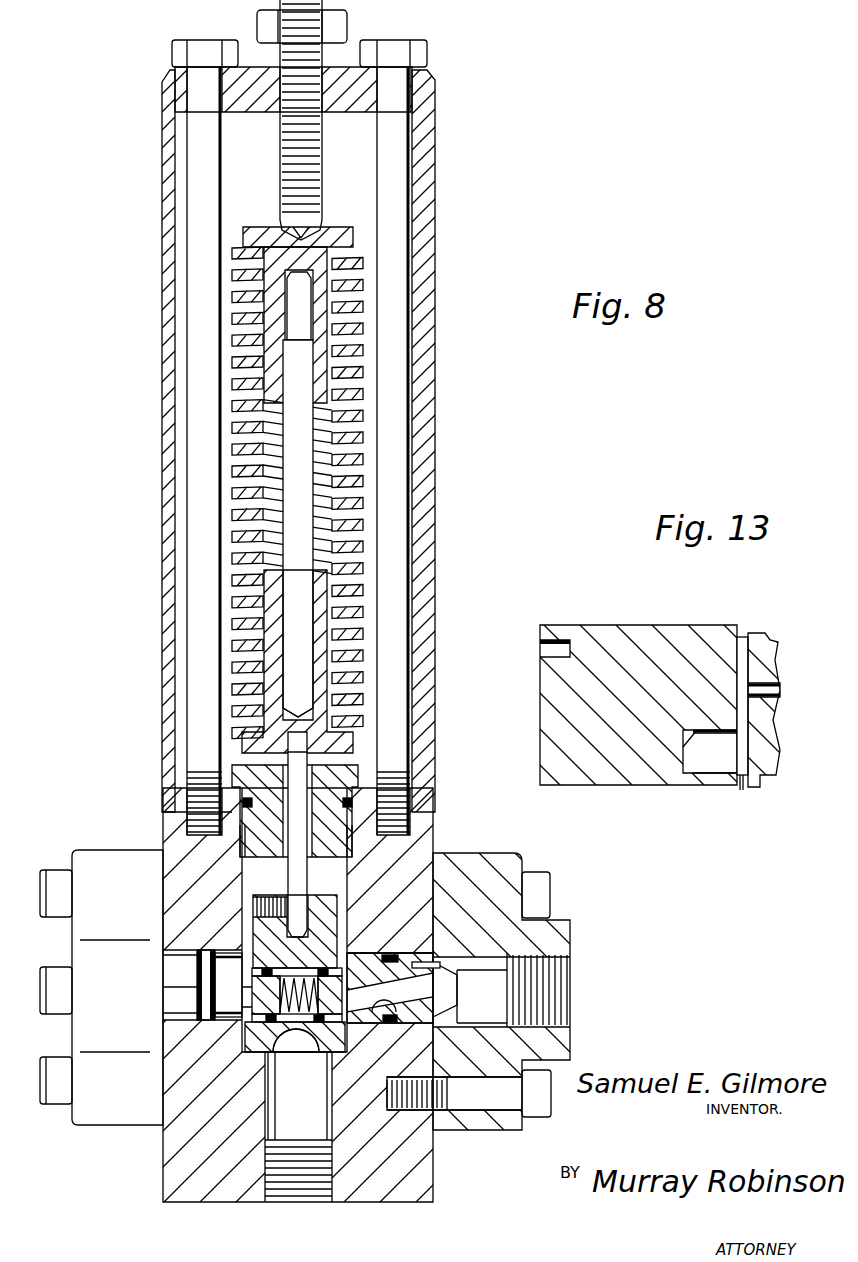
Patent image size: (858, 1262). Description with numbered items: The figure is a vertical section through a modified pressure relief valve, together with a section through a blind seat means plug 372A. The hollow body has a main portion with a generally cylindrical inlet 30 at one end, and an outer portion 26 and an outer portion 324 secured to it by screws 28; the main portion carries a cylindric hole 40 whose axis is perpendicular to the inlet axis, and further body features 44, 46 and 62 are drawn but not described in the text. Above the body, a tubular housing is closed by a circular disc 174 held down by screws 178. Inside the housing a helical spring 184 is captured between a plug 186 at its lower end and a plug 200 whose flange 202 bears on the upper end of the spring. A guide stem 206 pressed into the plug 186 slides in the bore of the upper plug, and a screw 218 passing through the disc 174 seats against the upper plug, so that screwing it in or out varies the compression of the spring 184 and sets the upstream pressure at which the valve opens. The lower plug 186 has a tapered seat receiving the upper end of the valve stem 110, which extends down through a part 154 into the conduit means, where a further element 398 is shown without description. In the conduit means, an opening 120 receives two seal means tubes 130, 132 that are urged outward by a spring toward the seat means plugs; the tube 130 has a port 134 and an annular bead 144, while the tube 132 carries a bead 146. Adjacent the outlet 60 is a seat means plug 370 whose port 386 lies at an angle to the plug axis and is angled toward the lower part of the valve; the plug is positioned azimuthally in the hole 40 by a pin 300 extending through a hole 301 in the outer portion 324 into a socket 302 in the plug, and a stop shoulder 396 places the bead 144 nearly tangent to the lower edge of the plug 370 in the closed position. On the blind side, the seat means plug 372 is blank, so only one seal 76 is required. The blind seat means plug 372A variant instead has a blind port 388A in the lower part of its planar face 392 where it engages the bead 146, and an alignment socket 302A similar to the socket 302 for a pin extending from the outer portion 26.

In FIG. 8, the circular disc 174 is at (430, 95).
In FIG. 8, the screw 178 is at (392, 176).
In FIG. 8, the screw 218 is at (318, 138).
In FIG. 8, the flange 202 is at (358, 242).
In FIG. 8, the plug 200 is at (332, 325).
In FIG. 8, the helical spring 184 is at (360, 382).
In FIG. 8, the guide stem 206 is at (303, 506).
In FIG. 8, the plug 186 is at (325, 670).
In FIG. 8, the plug 154 is at (343, 777).
In FIG. 8, the valve body 44 is at (433, 822).
In FIG. 8, the body top face 46 is at (163, 826).
In FIG. 8, the valve stem 110 is at (300, 872).
In FIG. 8, the retainer 398 is at (275, 898).
In FIG. 8, the port 134 is at (347, 953).
In FIG. 8, the seat means plug 370 is at (378, 953).
In FIG. 8, the opening 120 is at (248, 1032).
In FIG. 8, the seal 76 is at (213, 950).
In FIG. 8, the annular bead 146 is at (250, 975).
In FIG. 13, the annular bead 146 is at (740, 780).
In FIG. 8, the seat means plug 372 is at (175, 980).
In FIG. 8, the seal means tube 132 is at (250, 987).
In FIG. 8, the outer portion 26 is at (92, 852).
In FIG. 8, the screw 28 is at (55, 1108).
In FIG. 8, the seal means tube 130 is at (328, 1052).
In FIG. 8, the stop shoulder 396 is at (332, 1130).
In FIG. 8, the inlet 30 is at (330, 1128).
In FIG. 8, the outer portion 324 is at (515, 866).
In FIG. 8, the threaded plug 62 is at (548, 995).
In FIG. 8, the outlet 60 is at (495, 1020).
In FIG. 8, the hole 301 is at (445, 988).
In FIG. 8, the pin 300 is at (430, 965).
In FIG. 8, the socket 302 is at (415, 955).
In FIG. 8, the cylindric hole 40 is at (405, 1028).
In FIG. 8, the port 386 is at (376, 1030).
In FIG. 8, the annular bead 144 is at (362, 1045).
In FIG. 13, the blind seat means plug 372A is at (612, 660).
In FIG. 13, the alignment socket 302A is at (563, 640).
In FIG. 13, the planar face 392 is at (735, 660).
In FIG. 13, the blind port 388A is at (712, 778).